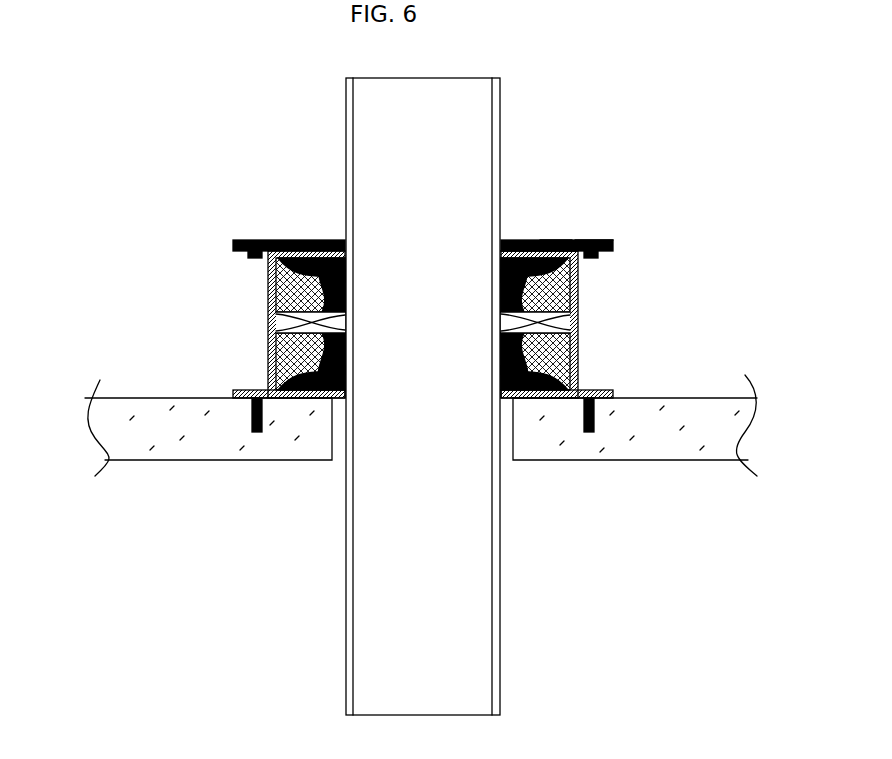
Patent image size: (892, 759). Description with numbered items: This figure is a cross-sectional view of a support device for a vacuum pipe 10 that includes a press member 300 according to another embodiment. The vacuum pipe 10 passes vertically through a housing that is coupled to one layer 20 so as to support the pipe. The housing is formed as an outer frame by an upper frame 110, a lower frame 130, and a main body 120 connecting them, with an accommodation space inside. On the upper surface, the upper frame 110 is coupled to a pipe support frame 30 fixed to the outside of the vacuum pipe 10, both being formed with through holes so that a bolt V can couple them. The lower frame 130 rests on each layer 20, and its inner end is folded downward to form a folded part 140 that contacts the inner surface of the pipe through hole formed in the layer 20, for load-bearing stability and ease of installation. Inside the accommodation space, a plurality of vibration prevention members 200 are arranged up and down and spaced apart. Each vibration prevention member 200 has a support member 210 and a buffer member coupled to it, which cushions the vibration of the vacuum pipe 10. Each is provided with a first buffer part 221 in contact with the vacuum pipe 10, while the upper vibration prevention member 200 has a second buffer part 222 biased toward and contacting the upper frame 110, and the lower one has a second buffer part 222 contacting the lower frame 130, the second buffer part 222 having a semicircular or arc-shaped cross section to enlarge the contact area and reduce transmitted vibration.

The vacuum pipe 10 is at (415, 515).
The layer 20 is at (673, 412).
The pipe support frame 30 is at (556, 240).
The bolt V is at (585, 240).
The upper frame 110 is at (605, 255).
The main body 120 is at (580, 280).
The lower frame 130 is at (606, 394).
The folded part 140 is at (335, 403).
The vibration prevention member 200 is at (266, 271).
The support member 210 is at (325, 240).
The first buffer part 221 is at (505, 240).
The second buffer part 222 is at (578, 386).
The press member 300 is at (267, 313).